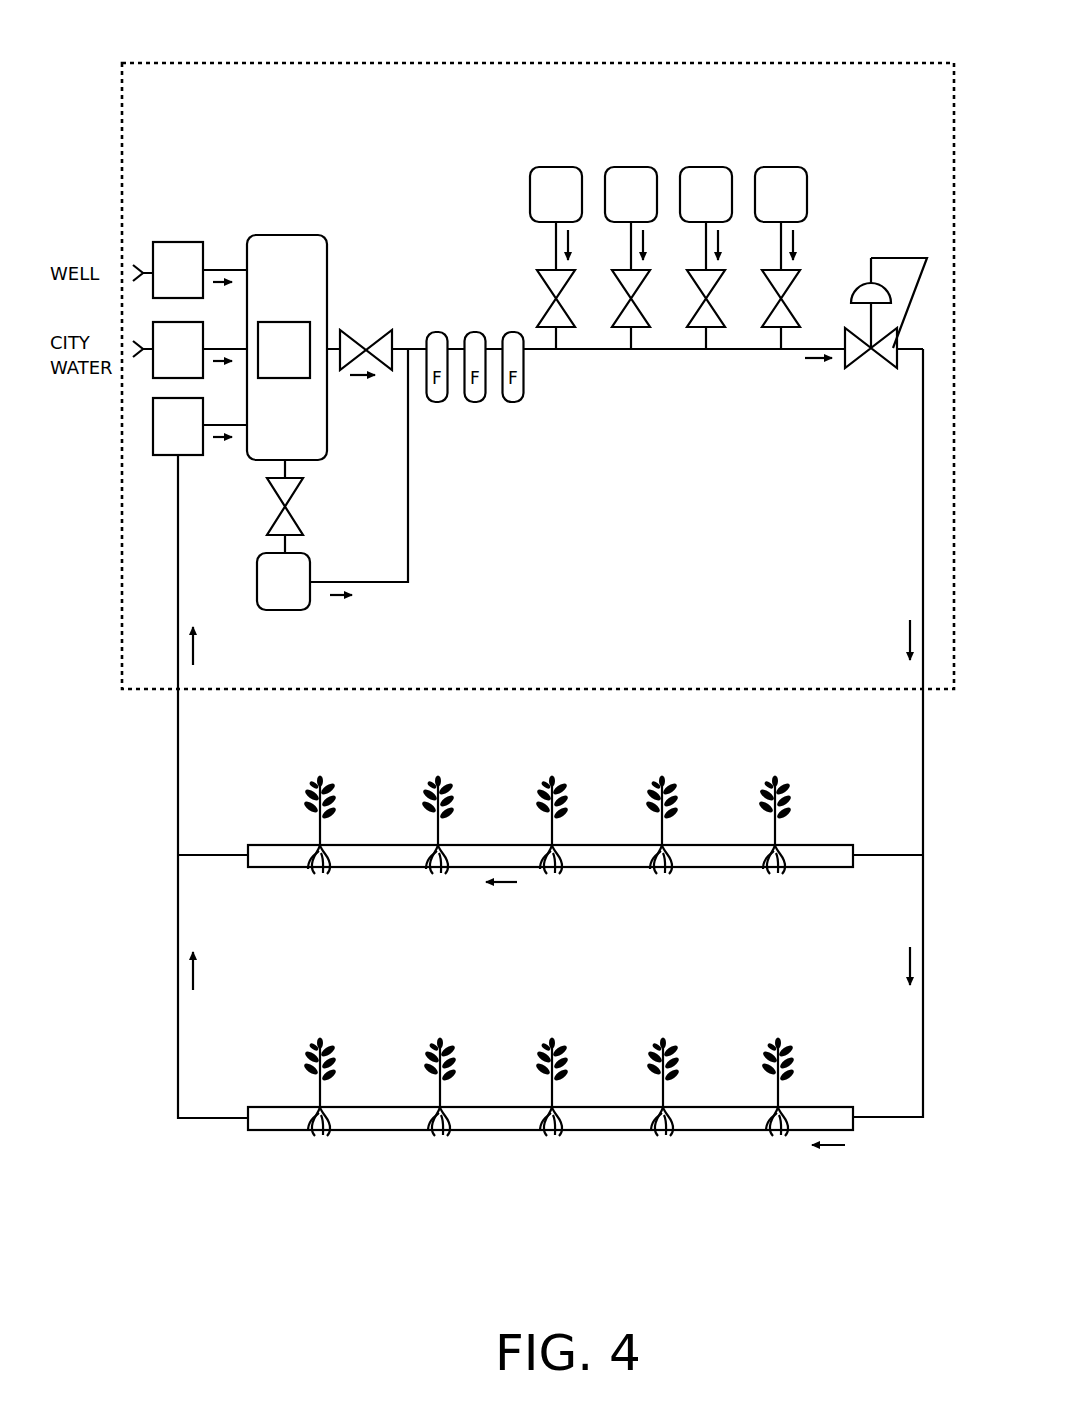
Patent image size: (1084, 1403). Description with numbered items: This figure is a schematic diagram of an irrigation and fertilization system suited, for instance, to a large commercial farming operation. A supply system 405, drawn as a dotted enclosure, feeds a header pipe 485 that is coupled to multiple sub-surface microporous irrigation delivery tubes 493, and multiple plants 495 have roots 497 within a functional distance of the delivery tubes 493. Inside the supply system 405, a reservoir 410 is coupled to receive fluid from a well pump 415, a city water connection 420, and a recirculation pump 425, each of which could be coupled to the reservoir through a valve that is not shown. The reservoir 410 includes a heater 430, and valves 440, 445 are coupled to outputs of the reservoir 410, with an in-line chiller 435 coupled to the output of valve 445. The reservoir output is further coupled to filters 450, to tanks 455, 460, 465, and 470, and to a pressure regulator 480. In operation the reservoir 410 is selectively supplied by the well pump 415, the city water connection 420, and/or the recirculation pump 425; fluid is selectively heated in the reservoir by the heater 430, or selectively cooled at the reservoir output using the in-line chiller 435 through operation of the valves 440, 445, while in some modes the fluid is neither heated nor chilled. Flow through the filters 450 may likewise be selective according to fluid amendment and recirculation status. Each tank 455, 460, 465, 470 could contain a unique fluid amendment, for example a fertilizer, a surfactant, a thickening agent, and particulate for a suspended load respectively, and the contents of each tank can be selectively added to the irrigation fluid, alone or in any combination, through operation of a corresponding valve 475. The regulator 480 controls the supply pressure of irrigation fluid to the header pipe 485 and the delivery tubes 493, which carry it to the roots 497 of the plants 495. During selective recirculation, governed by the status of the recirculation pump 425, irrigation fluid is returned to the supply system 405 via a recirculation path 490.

The supply system 405 is at (235, 62).
The reservoir 410 is at (280, 235).
The well pump 415 is at (178, 242).
The city water connection 420 is at (158, 372).
The recirculation pump 425 is at (193, 456).
The heater 430 is at (293, 322).
The in-line chiller 435 is at (285, 612).
The valve 440 is at (393, 322).
The valve 445 is at (308, 505).
The filters 450 is at (438, 331).
The tank 455 is at (553, 167).
The tank 460 is at (628, 167).
The tank 465 is at (703, 167).
The tank 470 is at (778, 167).
The valve 475 is at (575, 332).
The pressure regulator 480 is at (876, 243).
The header pipe 485 is at (923, 715).
The recirculation path 490 is at (178, 740).
The delivery tubes 493 is at (284, 870).
The plants 495 is at (765, 772).
The roots 497 is at (690, 877).